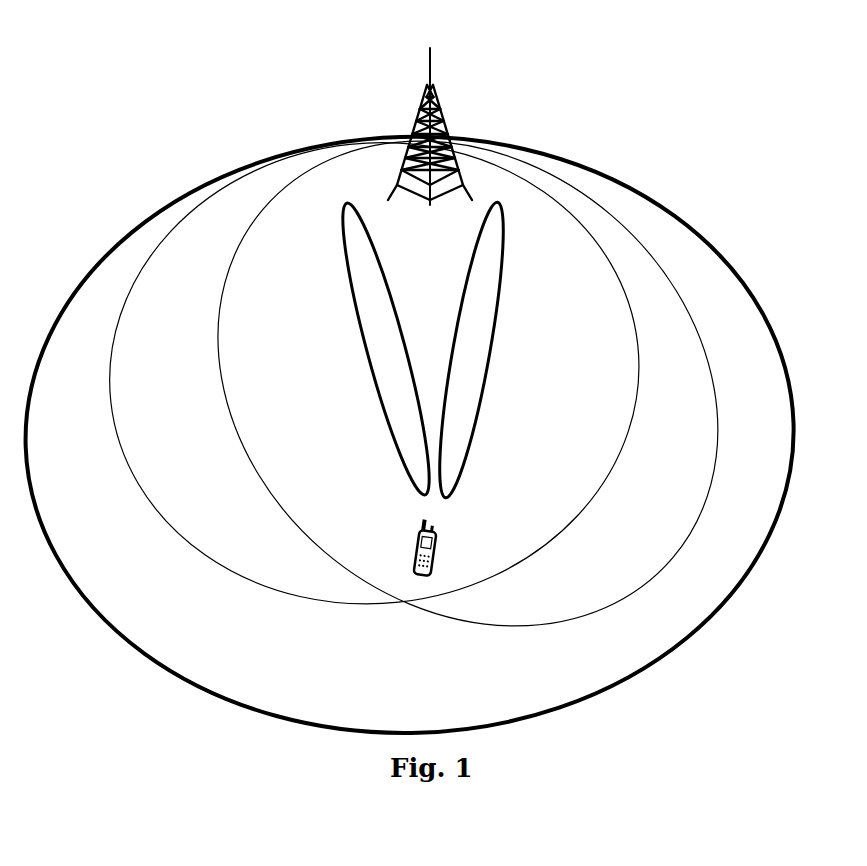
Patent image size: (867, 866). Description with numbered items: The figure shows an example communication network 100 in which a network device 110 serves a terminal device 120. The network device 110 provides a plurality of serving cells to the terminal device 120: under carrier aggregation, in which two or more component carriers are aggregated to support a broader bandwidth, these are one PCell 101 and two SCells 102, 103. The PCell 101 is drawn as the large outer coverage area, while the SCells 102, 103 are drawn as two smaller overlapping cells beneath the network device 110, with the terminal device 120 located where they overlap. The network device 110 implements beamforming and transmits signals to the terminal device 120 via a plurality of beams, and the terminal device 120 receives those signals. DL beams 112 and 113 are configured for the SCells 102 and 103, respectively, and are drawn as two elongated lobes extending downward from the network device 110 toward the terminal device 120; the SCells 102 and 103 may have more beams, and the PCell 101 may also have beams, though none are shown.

The communication network 100 is at (108, 43).
The PCell 101 is at (638, 193).
The SCell 102 is at (187, 542).
The SCell 103 is at (543, 627).
The network device 110 is at (433, 80).
The DL beam 112 is at (358, 318).
The DL beam 113 is at (497, 326).
The terminal device 120 is at (410, 543).